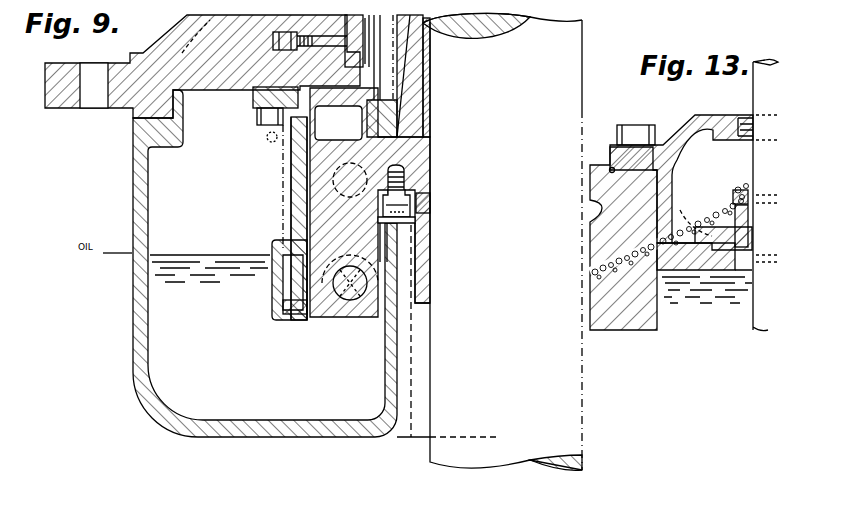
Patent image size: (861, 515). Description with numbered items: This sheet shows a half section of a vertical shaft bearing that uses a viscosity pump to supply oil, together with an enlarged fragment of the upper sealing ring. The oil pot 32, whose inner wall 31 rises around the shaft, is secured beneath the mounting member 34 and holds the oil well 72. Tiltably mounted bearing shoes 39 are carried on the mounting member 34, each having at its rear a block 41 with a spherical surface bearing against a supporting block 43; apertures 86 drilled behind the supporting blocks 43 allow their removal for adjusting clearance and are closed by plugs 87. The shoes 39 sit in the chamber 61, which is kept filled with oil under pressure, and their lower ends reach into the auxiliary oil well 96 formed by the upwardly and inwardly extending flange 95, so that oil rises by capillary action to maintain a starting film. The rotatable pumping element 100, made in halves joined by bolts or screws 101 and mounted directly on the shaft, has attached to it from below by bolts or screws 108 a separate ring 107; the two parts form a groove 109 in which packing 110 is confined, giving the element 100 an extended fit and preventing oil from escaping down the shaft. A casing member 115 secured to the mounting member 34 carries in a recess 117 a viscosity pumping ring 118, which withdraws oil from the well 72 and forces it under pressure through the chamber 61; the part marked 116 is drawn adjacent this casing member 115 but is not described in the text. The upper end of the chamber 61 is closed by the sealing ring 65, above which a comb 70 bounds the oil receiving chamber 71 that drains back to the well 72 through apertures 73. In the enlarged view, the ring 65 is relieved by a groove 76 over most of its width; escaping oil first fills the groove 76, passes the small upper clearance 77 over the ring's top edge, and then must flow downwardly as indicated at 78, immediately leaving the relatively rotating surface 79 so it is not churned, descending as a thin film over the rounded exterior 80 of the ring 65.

In FIG. 9, the inner wall 31 is at (396, 372).
In FIG. 9, the oil pot 32 is at (140, 375).
In FIG. 9, the mounting member 34 is at (250, 75).
In FIG. 9, the bearing shoes 39 is at (410, 102).
In FIG. 9, the block 41 is at (388, 56).
In FIG. 9, the supporting block 43 is at (352, 52).
In FIG. 9, the chamber 61 is at (372, 78).
In FIG. 13, the chamber 61 is at (737, 303).
In FIG. 13, the sealing ring 65 is at (755, 249).
In FIG. 13, the comb 70 is at (749, 117).
In FIG. 13, the oil receiving chamber 71 is at (693, 150).
In FIG. 9, the oil well 72 is at (182, 385).
In FIG. 13, the apertures 73 is at (654, 249).
In FIG. 13, the groove 76 is at (755, 229).
In FIG. 13, the upper clearance 77 is at (756, 193).
In FIG. 13, the downward oil flow 78 is at (737, 197).
In FIG. 13, the relatively rotating surface 79 is at (757, 158).
In FIG. 13, the rounded surface 80 is at (742, 200).
In FIG. 9, the apertures 86 is at (330, 40).
In FIG. 9, the plugs 87 is at (272, 37).
In FIG. 9, the flange 95 is at (300, 120).
In FIG. 9, the auxiliary oil well 96 is at (315, 125).
In FIG. 9, the rotatable pumping element 100 is at (420, 165).
In FIG. 9, the bolts or screws 101 is at (350, 300).
In FIG. 9, the ring 107 is at (426, 249).
In FIG. 9, the bolts or screws 108 is at (406, 180).
In FIG. 9, the groove 109 is at (433, 204).
In FIG. 9, the packing 110 is at (432, 198).
In FIG. 9, the casing member 115 is at (300, 195).
In FIG. 9, the strip 116 is at (266, 144).
In FIG. 9, the recess 117 is at (284, 288).
In FIG. 9, the viscosity pumping ring 118 is at (305, 316).